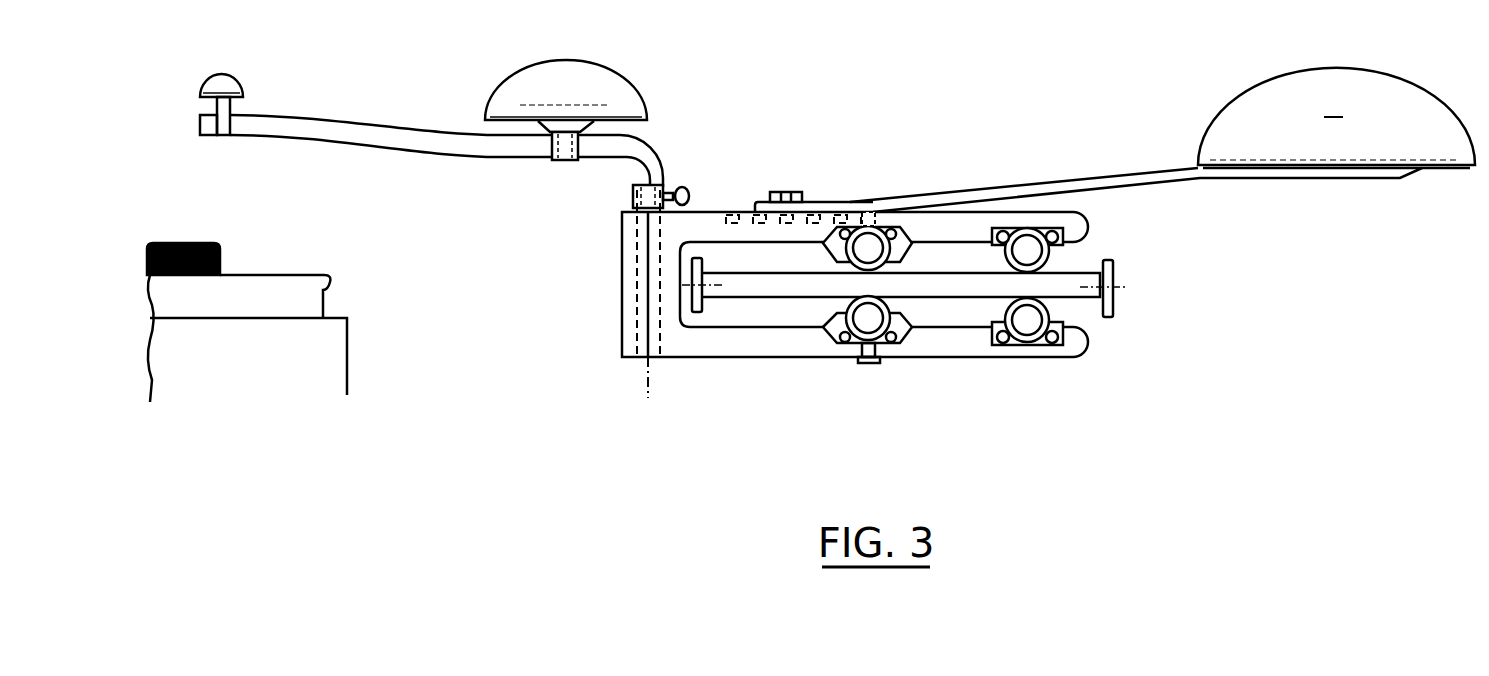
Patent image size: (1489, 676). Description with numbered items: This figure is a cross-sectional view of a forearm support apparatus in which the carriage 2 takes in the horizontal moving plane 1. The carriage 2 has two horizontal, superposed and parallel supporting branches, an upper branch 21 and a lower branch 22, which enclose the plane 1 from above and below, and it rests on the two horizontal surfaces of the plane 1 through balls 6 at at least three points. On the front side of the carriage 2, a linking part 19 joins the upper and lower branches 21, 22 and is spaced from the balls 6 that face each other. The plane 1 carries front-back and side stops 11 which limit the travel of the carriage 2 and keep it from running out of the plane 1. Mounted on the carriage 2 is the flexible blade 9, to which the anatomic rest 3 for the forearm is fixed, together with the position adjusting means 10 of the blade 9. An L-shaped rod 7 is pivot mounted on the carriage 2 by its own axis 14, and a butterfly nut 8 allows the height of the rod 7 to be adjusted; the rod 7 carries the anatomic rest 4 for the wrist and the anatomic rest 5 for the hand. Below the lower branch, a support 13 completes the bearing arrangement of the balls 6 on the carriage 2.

The horizontal moving plane 1 is at (1088, 271).
The carriage 2 is at (699, 353).
The anatomic rest of the forearm 3 is at (1336, 118).
The anatomic rest for the wrist 4 is at (566, 110).
The anatomic rest for the hand 5 is at (223, 74).
The balls 6 is at (943, 278).
The L-shaped rod 7 is at (457, 147).
The butterfly nut 8 is at (670, 187).
The flexible blade 9 is at (997, 187).
The position adjusting means 10 is at (788, 192).
The front-back and side stops 11 is at (692, 300).
The support 13 is at (902, 340).
The axis 14 is at (648, 378).
The linking part 19 is at (630, 283).
The upper arm 21 is at (1086, 228).
The lower arm 22 is at (1085, 348).